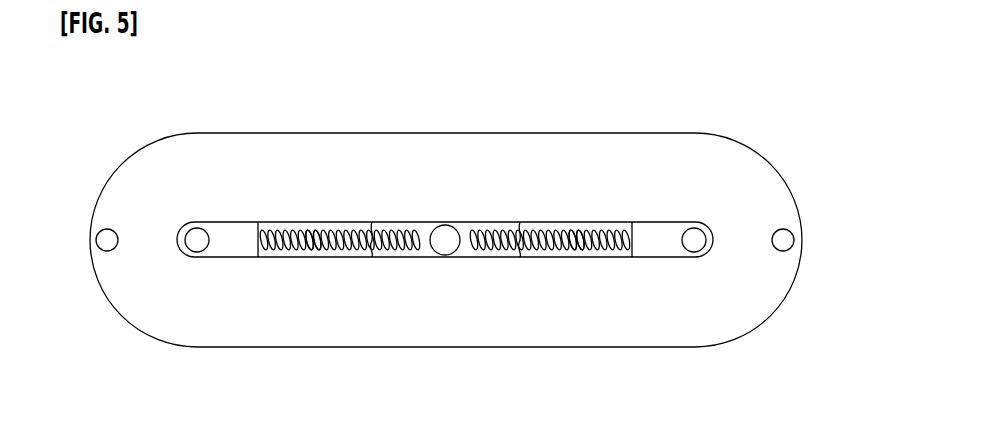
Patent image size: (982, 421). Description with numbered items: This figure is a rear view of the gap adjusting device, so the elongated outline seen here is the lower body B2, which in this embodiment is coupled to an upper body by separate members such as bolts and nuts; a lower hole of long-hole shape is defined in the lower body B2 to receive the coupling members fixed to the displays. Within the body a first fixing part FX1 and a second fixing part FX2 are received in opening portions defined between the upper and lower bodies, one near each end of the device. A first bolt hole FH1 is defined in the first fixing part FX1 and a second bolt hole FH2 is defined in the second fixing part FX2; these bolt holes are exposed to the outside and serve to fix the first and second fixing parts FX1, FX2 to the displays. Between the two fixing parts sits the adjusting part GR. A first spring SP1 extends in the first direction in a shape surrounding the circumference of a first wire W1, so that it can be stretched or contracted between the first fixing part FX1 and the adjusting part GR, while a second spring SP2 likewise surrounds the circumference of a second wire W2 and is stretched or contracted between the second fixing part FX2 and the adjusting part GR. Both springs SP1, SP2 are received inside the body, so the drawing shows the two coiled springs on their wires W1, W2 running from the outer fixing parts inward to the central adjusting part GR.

The lower body B2 is at (760, 297).
The first bolt hole FH1 is at (192, 246).
The second bolt hole FH2 is at (700, 246).
The first fixing part FX1 is at (243, 243).
The second fixing part FX2 is at (650, 243).
The first spring SP1 is at (333, 245).
The second spring SP2 is at (558, 250).
The first wire W1 is at (312, 228).
The second wire W2 is at (580, 232).
The adjusting part GR is at (447, 240).